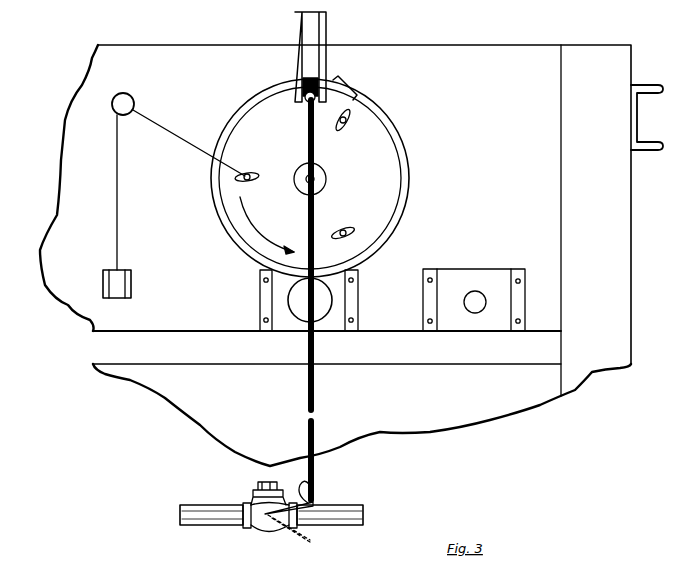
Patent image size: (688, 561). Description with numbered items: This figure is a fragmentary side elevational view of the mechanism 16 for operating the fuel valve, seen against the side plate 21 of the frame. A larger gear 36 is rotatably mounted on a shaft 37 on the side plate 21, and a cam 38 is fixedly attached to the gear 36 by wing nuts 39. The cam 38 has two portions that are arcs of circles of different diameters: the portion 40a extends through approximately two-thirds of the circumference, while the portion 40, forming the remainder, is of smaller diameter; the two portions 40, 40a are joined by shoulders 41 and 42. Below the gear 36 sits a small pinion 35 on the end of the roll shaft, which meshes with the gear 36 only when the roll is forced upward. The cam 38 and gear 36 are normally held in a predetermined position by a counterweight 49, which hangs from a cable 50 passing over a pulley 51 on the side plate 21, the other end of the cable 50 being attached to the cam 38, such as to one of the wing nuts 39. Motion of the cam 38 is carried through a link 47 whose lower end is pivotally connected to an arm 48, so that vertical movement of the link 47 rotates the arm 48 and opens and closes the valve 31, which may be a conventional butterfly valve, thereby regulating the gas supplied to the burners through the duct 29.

The side plate 21 is at (500, 56).
The pulley 51 is at (128, 100).
The cable 50 is at (117, 232).
The counterweight 49 is at (132, 288).
The shoulder 42 is at (235, 165).
The gear 36 is at (408, 190).
The cam 38 is at (388, 157).
The cam portion 40 is at (335, 83).
The cam portion 40a is at (407, 206).
The shoulder 41 is at (353, 97).
The gas flow regulating mechanism 16 is at (401, 251).
The shaft 37 is at (318, 178).
The wing nuts 39 is at (252, 172).
The link 47 is at (315, 432).
The pinion 35 is at (290, 301).
The duct 29 is at (364, 517).
The valve 31 is at (262, 527).
The arm 48 is at (302, 487).